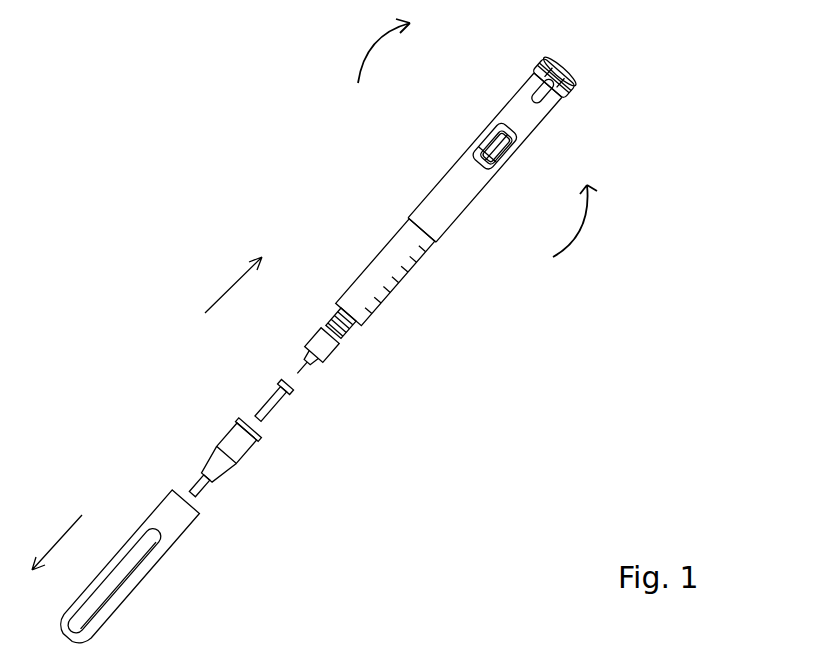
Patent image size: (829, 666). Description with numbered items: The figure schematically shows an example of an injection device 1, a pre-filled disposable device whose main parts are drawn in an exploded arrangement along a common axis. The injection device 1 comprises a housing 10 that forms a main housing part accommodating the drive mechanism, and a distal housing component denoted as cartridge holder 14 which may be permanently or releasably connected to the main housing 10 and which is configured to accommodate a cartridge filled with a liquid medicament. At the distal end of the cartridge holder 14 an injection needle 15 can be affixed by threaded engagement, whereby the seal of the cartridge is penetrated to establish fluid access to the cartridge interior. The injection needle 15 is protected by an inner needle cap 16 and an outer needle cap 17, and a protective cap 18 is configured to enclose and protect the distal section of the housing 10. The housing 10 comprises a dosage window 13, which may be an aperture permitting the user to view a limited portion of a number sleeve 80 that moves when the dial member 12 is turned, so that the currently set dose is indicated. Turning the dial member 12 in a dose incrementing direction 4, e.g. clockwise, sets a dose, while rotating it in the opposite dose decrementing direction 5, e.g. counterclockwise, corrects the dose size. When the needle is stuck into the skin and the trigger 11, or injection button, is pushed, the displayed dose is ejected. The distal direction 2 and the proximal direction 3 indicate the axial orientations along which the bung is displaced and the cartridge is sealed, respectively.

The injection device 1 is at (332, 336).
The distal direction 2 is at (57, 538).
The proximal direction 3 is at (227, 285).
The dose incrementing direction 4 is at (380, 51).
The dose decrementing direction 5 is at (575, 240).
The housing 10 is at (445, 181).
The trigger 11 is at (591, 66).
The dial member 12 is at (527, 66).
The dosage window 13 is at (503, 130).
The cartridge holder 14 is at (375, 262).
The injection needle 15 is at (318, 338).
The inner needle cap 16 is at (272, 398).
The outer needle cap 17 is at (228, 433).
The protective cap 18 is at (160, 510).
The number sleeve 80 is at (507, 153).